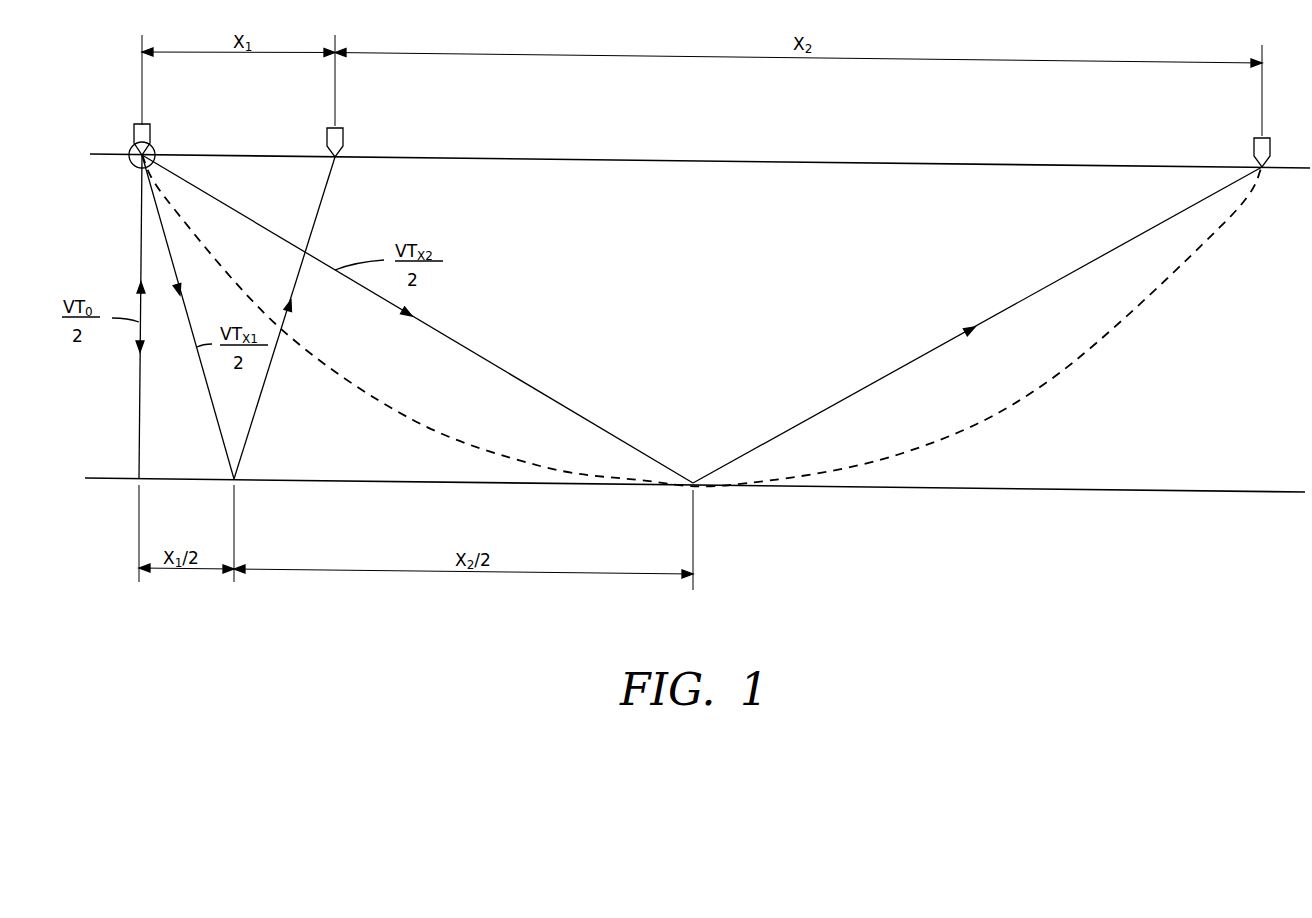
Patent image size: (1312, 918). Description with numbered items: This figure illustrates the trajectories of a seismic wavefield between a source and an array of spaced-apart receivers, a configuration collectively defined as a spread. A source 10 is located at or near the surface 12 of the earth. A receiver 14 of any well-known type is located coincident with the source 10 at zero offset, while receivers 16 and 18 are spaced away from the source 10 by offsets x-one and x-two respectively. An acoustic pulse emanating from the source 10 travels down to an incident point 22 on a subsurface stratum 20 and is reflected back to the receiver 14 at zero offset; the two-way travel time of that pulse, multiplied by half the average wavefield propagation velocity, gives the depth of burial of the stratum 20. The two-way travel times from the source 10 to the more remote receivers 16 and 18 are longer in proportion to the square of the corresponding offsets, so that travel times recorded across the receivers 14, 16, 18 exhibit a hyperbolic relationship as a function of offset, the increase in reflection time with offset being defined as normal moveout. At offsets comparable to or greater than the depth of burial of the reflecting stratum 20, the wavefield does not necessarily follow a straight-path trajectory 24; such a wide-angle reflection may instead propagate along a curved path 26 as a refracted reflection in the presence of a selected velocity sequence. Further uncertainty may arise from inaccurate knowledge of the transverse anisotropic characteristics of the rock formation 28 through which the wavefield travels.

The source 10 is at (151, 149).
The surface 12 is at (805, 162).
The receiver 14 is at (138, 125).
The receiver 16 is at (328, 128).
The receiver 18 is at (1255, 138).
The subsurface stratum 20 is at (103, 480).
The incident point 22 is at (138, 477).
The straight-path trajectory 24 is at (492, 363).
The curved path 26 is at (388, 403).
The rock formation 28 is at (712, 314).